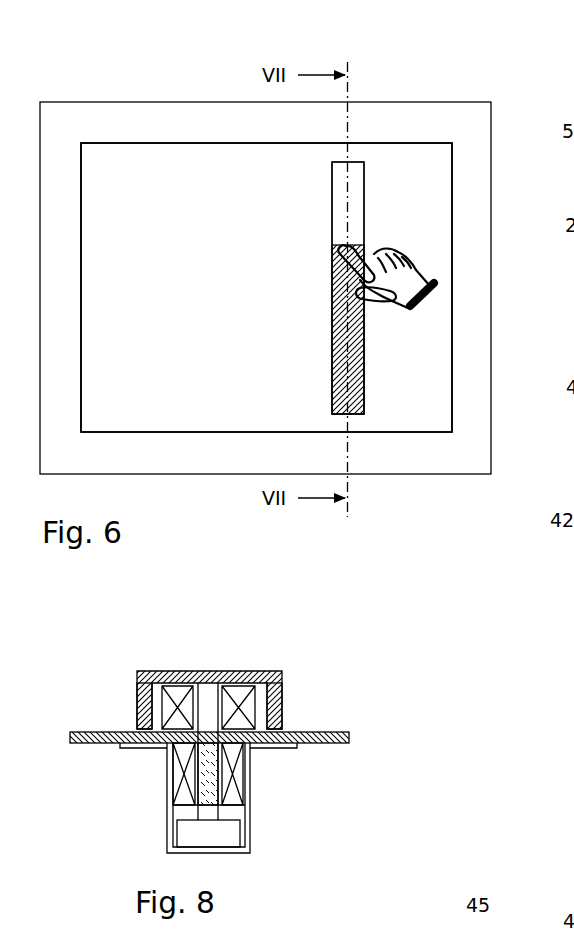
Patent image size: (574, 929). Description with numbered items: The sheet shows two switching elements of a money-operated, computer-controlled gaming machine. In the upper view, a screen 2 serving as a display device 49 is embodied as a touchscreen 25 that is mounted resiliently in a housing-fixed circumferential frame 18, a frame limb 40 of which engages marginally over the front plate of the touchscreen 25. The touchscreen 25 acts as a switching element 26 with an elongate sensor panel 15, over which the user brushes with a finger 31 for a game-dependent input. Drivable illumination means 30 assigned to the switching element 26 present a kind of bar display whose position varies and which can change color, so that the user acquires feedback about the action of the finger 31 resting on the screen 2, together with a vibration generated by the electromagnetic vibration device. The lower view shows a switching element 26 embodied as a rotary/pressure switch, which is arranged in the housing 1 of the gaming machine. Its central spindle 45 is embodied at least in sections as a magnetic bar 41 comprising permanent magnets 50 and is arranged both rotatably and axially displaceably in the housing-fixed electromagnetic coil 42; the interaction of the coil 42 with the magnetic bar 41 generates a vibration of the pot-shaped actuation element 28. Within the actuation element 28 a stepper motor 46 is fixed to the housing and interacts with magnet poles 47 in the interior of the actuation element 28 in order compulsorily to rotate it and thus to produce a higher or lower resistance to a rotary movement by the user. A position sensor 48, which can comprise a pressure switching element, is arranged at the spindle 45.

In FIG. 8, the housing 1 is at (323, 742).
In FIG. 6, the screen 2 is at (150, 248).
In FIG. 6, the sensor panel 15 is at (346, 229).
In FIG. 6, the circumferential frame 18 is at (300, 247).
In FIG. 6, the touchscreen 25 is at (425, 365).
In FIG. 6, the switching element 26 is at (372, 393).
In FIG. 8, the actuation element 28 is at (250, 672).
In FIG. 6, the illumination means 30 is at (327, 363).
In FIG. 6, the finger 31 is at (362, 248).
In FIG. 6, the frame limb 40 is at (468, 112).
In FIG. 8, the magnetic bar 41 is at (208, 772).
In FIG. 8, the electromagnetic coil 42 is at (233, 800).
In FIG. 8, the central spindle 45 is at (210, 693).
In FIG. 8, the stepper motor 46 is at (177, 690).
In FIG. 8, the magnet poles 47 is at (158, 707).
In FIG. 8, the position sensor 48 is at (223, 835).
In FIG. 6, the display device 49 is at (137, 140).
In FIG. 8, the permanent magnet 50 is at (198, 758).